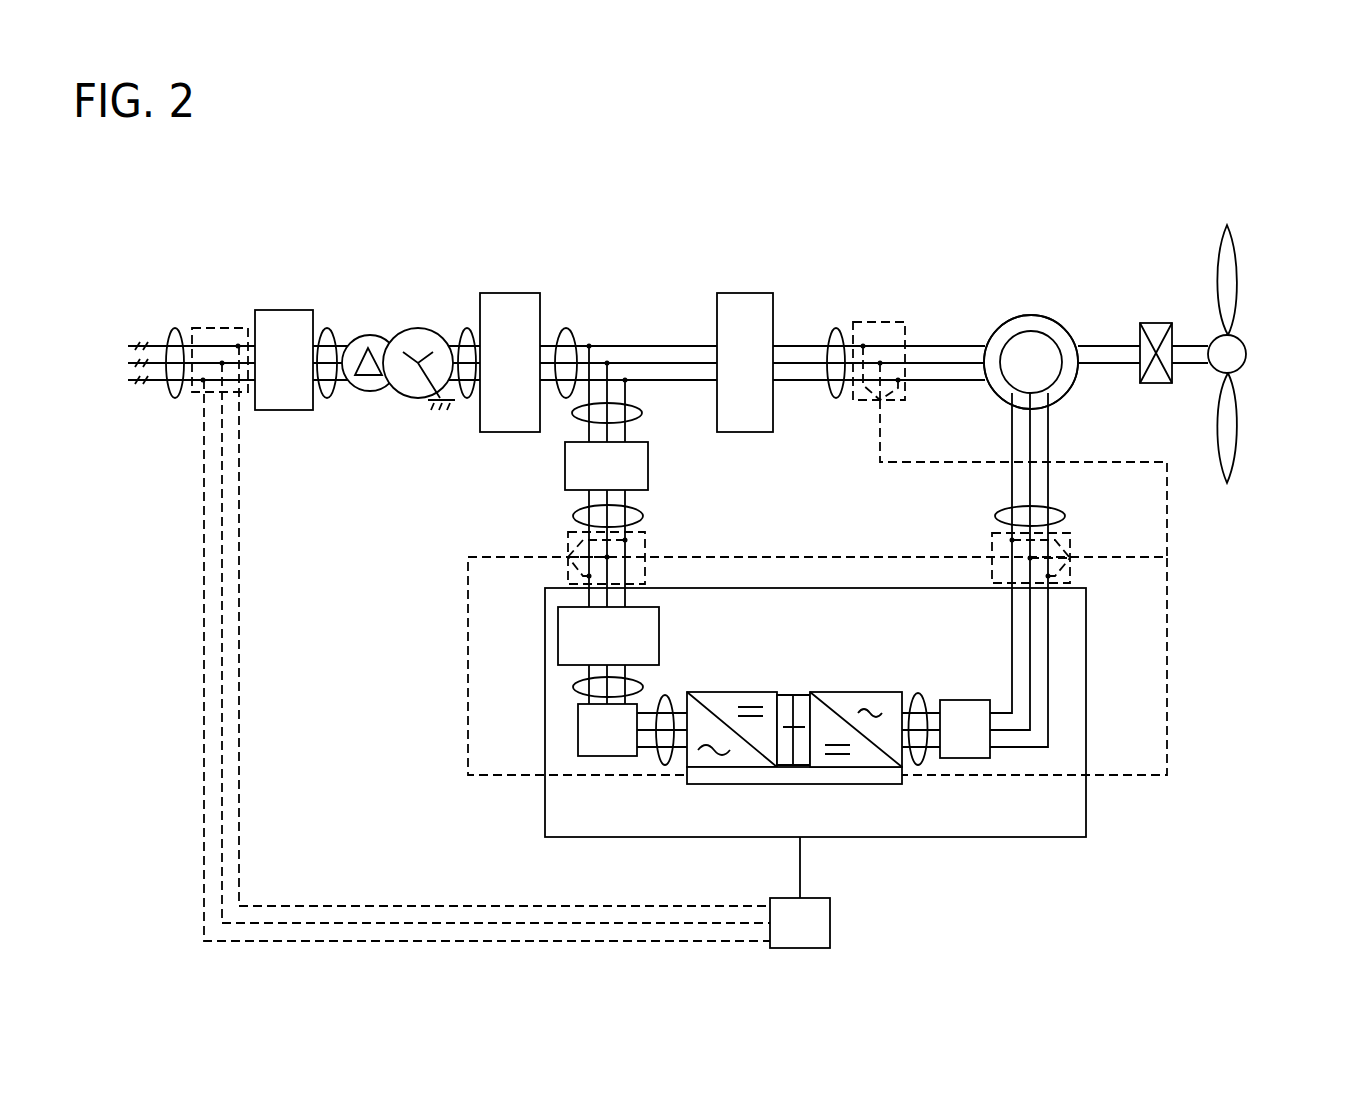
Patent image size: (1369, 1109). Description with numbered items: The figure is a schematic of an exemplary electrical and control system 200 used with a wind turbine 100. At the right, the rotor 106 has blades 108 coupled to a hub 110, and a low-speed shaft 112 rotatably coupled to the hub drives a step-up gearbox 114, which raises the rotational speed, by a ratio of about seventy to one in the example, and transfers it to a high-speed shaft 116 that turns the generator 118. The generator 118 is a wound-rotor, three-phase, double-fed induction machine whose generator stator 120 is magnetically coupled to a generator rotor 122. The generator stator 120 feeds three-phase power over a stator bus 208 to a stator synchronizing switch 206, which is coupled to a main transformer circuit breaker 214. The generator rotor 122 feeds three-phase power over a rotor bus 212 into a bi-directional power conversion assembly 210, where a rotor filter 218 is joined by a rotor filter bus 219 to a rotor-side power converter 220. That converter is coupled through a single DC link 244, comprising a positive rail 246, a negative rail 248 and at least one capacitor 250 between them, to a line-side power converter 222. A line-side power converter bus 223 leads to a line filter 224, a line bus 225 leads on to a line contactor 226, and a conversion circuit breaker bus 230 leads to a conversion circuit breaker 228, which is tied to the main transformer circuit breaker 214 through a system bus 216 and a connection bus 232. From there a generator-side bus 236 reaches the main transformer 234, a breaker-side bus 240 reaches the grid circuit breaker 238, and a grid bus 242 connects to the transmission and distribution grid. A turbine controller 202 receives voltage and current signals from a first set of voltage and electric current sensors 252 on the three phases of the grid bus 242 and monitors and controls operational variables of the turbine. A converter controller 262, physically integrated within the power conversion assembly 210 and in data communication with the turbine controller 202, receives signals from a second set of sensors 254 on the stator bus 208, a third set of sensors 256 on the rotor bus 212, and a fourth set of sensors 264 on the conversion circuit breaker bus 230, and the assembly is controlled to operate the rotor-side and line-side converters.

The wind turbine 100 is at (1218, 202).
The rotor 106 is at (1258, 325).
The blades 108 is at (1238, 283).
The hub 110 is at (1247, 353).
The low-speed shaft 112 is at (1187, 346).
The step-up gearbox 114 is at (1152, 323).
The high-speed shaft 116 is at (1107, 346).
The generator 118 is at (1033, 270).
The generator stator 120 is at (1030, 315).
The generator rotor 122 is at (1023, 342).
The electrical and control system 200 is at (225, 186).
The turbine controller 202 is at (800, 892).
The stator synchronizing switch 206 is at (745, 293).
The stator bus 208 is at (836, 328).
The power conversion assembly 210 is at (1087, 710).
The rotor bus 212 is at (1065, 516).
The main transformer circuit breaker 214 is at (510, 293).
The system bus 216 is at (566, 328).
The rotor filter 218 is at (962, 708).
The rotor filter bus 219 is at (919, 693).
The rotor-side power converter 220 is at (902, 767).
The line-side power converter 222 is at (687, 767).
The line-side power converter bus 223 is at (665, 695).
The line filter 224 is at (578, 730).
The line bus 225 is at (573, 687).
The line contactor 226 is at (558, 637).
The conversion circuit breaker 228 is at (648, 467).
The conversion circuit breaker bus 230 is at (643, 516).
The connection bus 232 is at (642, 413).
The main transformer 234 is at (418, 328).
The generator-side bus 236 is at (467, 318).
The grid circuit breaker 238 is at (270, 310).
The breaker-side bus 240 is at (327, 328).
The grid bus 242 is at (175, 327).
The DC link 244 is at (773, 648).
The positive rail 246 is at (802, 697).
The negative rail 248 is at (808, 767).
The capacitor 250 is at (790, 725).
The first set of voltage and electric current sensors 252 is at (190, 408).
The second set of voltage and electric current sensors 254 is at (897, 303).
The third set of voltage and electric current sensors 256 is at (970, 555).
The converter controller 262 is at (857, 775).
The fourth set of voltage and electric current sensors 264 is at (647, 558).